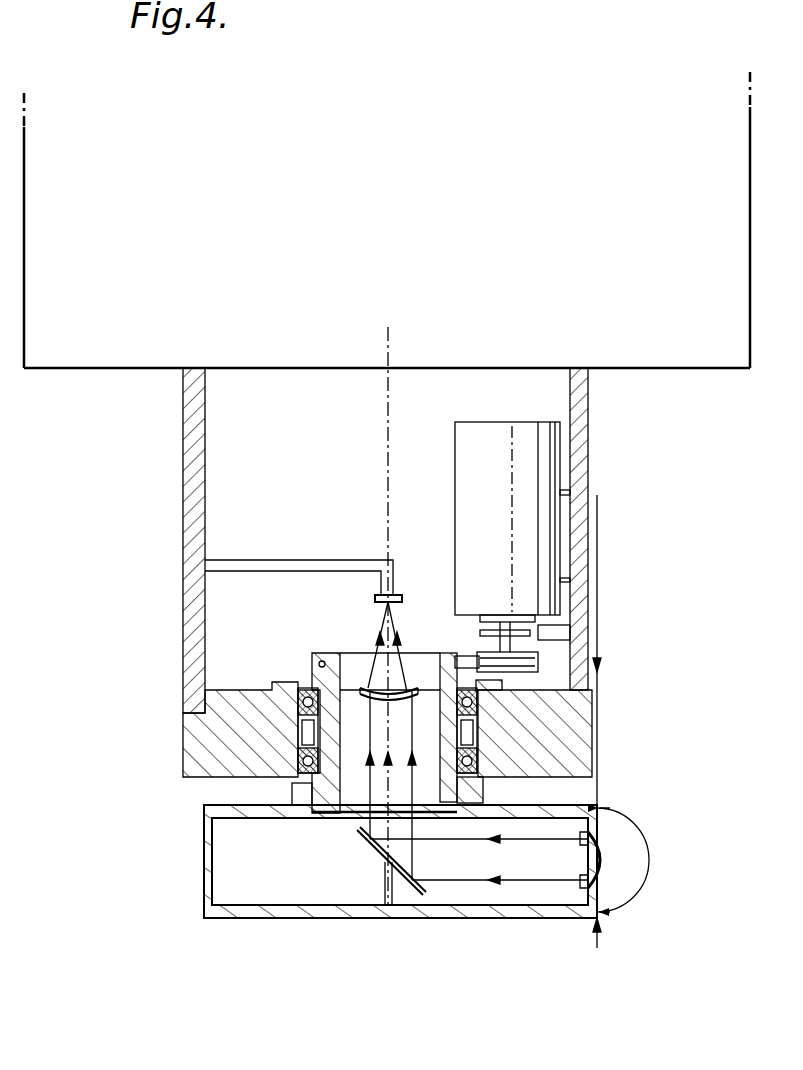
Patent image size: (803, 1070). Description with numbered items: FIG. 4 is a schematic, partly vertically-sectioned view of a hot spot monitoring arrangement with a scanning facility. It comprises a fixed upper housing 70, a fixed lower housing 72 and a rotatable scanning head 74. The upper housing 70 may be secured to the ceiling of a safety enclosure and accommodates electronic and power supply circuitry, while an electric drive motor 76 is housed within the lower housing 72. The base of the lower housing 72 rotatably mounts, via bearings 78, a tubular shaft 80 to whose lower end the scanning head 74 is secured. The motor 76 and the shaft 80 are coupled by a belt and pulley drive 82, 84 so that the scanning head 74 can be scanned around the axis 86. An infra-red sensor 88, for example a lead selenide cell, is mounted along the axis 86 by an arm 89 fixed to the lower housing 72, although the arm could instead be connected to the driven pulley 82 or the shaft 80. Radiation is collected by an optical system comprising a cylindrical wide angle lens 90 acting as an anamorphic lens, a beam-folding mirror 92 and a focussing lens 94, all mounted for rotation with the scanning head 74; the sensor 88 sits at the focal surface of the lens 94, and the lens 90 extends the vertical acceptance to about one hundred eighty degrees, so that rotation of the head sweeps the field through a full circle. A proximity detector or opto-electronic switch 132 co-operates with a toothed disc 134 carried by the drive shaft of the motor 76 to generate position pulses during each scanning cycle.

The upper housing 70 is at (688, 332).
The lower housing 72 is at (583, 422).
The scanning head 74 is at (204, 858).
The electric drive motor 76 is at (538, 480).
The bearings 78 is at (295, 686).
The tubular shaft 80 is at (348, 690).
The driven pulley 82 is at (320, 660).
The belt and pulley drive 84 is at (470, 655).
The axis 86 is at (388, 475).
The infra-red sensor 88 is at (400, 595).
The arm 89 is at (238, 560).
The wide angle lens 90 is at (590, 855).
The beam-folding mirror 92 is at (378, 850).
The focussing lens 94 is at (395, 695).
The proximity detector or opto-electronic switch 132 is at (560, 635).
The toothed disc 134 is at (483, 620).